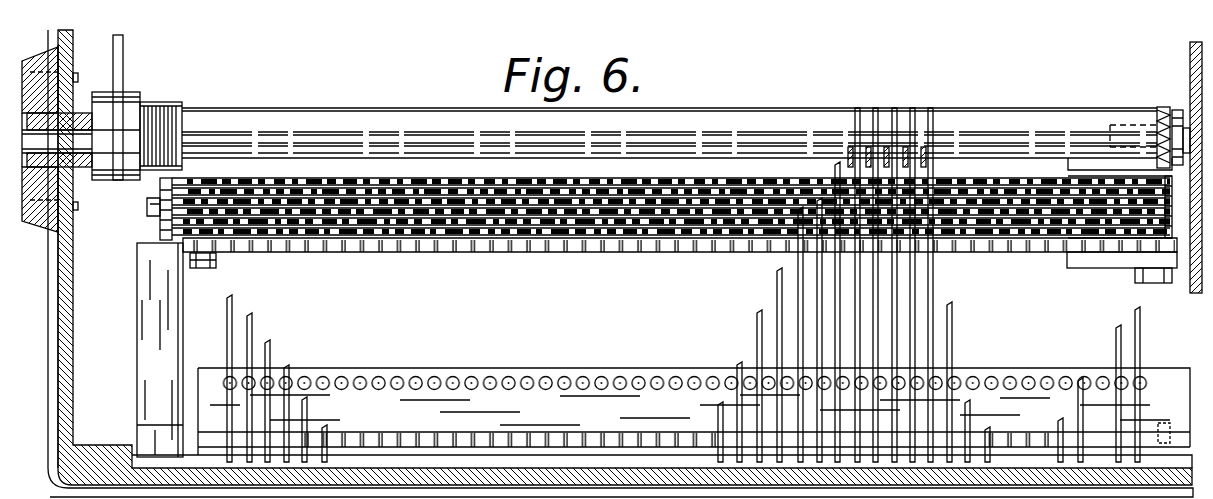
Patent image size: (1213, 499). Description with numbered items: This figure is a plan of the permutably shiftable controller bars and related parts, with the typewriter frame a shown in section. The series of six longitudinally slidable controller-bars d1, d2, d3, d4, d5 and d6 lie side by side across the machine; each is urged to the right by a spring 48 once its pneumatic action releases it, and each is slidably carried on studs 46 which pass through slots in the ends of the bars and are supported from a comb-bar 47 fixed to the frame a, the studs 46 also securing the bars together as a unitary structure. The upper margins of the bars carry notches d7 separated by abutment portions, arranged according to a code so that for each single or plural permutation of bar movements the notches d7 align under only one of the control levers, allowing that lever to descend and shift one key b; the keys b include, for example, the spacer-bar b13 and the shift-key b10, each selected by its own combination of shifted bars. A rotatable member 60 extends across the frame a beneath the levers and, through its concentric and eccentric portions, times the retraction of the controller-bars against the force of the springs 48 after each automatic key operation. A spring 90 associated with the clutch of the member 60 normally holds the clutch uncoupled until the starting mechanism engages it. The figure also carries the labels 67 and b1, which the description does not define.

The disc 67 is at (121, 48).
The rotatable member 60 is at (389, 122).
The spring 90 is at (1167, 116).
The spring 48 is at (160, 228).
The stud 46 is at (222, 266).
The comb-bar 47 is at (447, 252).
The frame a is at (76, 368).
The controller-bar d1 is at (560, 229).
The controller-bar d2 is at (590, 219).
The controller-bar d3 is at (618, 208).
The controller-bar d4 is at (667, 199).
The controller-bar d5 is at (717, 189).
The controller-bar d6 is at (752, 179).
The notch d7 is at (1082, 227).
The spacer-bar b13 is at (272, 351).
The key b is at (312, 411).
The shift-key b10 is at (1117, 330).
The key lever b1 is at (1141, 327).